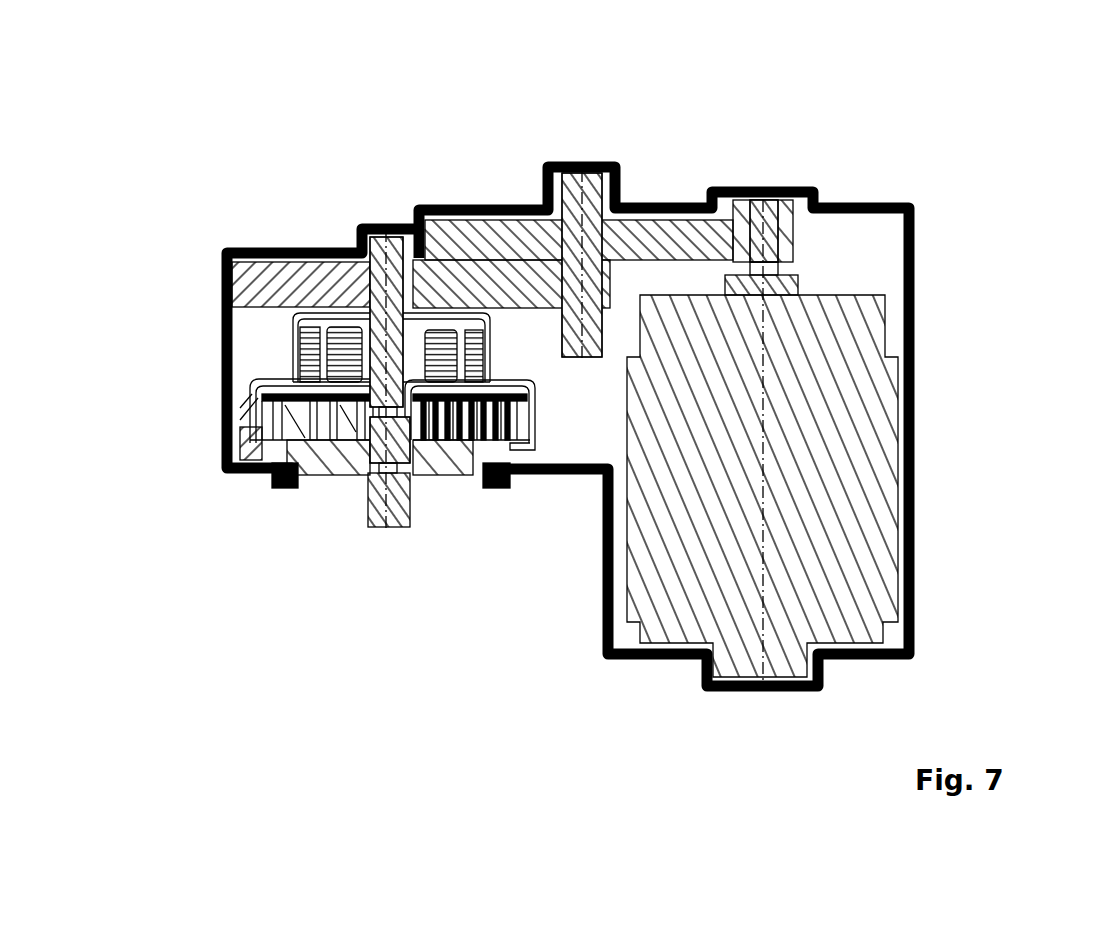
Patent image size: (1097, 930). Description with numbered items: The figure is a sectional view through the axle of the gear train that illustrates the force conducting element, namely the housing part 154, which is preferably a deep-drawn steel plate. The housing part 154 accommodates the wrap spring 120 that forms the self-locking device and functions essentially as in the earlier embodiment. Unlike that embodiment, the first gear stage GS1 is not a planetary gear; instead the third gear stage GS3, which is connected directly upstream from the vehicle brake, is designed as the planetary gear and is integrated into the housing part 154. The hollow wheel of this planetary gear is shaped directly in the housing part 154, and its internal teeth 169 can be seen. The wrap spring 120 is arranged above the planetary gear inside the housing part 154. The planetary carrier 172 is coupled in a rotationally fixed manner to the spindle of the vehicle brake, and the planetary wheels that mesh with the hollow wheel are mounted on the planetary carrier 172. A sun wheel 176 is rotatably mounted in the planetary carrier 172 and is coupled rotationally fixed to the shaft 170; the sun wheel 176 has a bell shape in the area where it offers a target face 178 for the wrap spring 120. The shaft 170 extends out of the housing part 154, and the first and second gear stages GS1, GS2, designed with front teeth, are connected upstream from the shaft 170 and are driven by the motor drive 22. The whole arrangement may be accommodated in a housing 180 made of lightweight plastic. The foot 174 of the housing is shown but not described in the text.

The motor drive 22 is at (913, 408).
The wrap spring 120 is at (297, 351).
The housing part 154 is at (263, 423).
The internal teeth 169 is at (467, 440).
The shaft 170 is at (380, 233).
The planetary carrier 172 is at (333, 468).
The housing foot 174 is at (272, 487).
The sun wheel 176 is at (367, 503).
The target face 178 is at (300, 327).
The housing 180 is at (913, 331).
The first gear stage GS1 is at (724, 190).
The second gear stage GS2 is at (527, 222).
The third gear stage GS3 is at (217, 458).